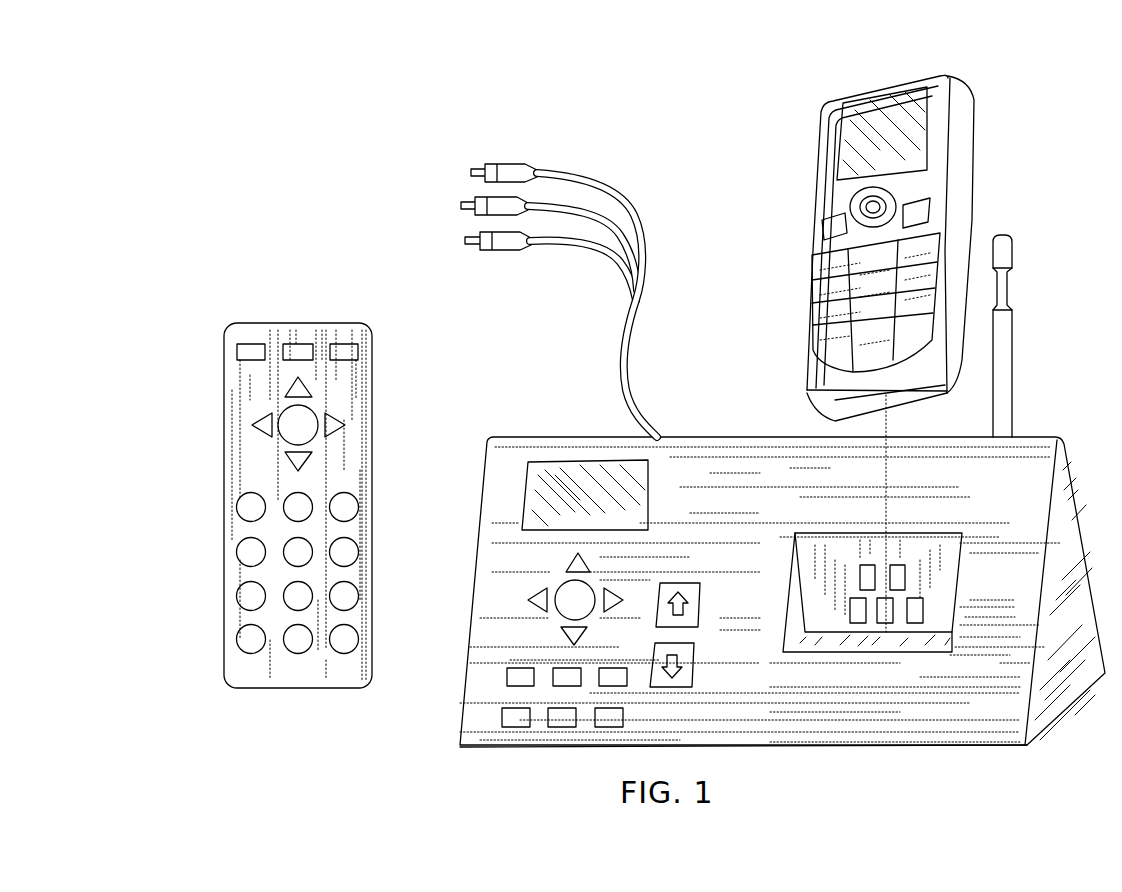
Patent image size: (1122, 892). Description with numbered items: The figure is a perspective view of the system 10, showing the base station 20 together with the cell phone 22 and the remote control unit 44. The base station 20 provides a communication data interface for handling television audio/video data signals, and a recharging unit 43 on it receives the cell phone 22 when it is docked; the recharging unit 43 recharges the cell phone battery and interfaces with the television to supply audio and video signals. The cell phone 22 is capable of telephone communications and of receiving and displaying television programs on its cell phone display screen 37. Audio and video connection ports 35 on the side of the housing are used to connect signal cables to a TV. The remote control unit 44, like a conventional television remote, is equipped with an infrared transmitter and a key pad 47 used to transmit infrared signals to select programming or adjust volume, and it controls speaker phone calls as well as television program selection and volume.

The system 10 is at (244, 184).
The base station 20 is at (684, 428).
The cell phone 22 is at (998, 125).
The audio and video connection ports 35 is at (548, 177).
The cell phone display screen 37 is at (868, 147).
The recharging unit 43 is at (905, 627).
The remote control unit 44 is at (298, 322).
The key pad 47 is at (336, 451).